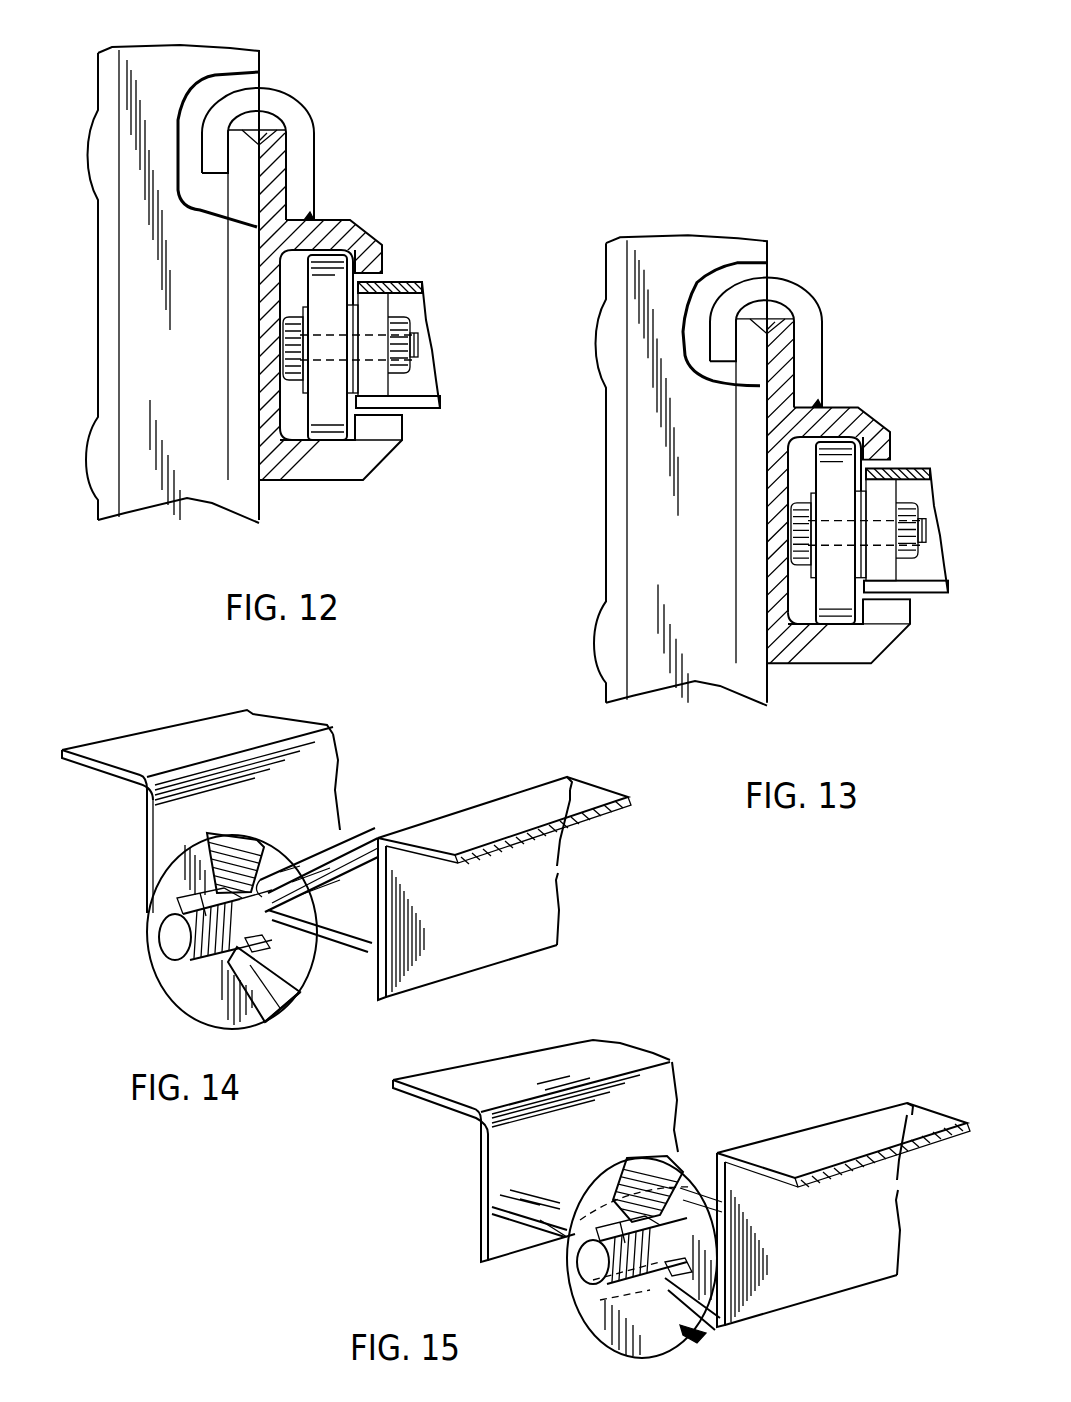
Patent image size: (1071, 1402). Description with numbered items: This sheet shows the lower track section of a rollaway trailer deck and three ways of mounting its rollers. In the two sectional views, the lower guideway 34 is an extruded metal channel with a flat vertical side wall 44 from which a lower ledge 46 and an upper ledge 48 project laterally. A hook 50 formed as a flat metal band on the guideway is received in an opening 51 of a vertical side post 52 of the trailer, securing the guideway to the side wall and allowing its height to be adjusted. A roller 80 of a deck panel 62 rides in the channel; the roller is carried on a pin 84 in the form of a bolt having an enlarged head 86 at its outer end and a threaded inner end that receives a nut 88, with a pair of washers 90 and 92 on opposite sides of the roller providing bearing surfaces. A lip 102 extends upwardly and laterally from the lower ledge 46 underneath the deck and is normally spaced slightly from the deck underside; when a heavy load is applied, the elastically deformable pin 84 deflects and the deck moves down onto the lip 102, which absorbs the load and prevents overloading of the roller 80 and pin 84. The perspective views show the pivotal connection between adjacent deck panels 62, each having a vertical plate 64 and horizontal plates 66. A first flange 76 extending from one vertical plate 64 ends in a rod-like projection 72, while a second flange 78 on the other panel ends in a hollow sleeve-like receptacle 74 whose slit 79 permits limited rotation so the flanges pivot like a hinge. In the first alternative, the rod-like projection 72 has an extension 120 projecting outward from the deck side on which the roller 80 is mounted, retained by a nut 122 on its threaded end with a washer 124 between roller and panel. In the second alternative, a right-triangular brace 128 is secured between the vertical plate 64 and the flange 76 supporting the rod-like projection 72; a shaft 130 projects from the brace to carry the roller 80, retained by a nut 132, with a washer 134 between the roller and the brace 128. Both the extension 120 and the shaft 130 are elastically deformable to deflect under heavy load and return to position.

In FIG. 12, the lower guideway 34 is at (313, 293).
In FIG. 13, the lower guideway 34 is at (729, 462).
In FIG. 12, the vertical side wall 44 is at (260, 346).
In FIG. 13, the vertical side wall 44 is at (729, 491).
In FIG. 12, the lower ledge 46 is at (334, 468).
In FIG. 13, the lower ledge 46 is at (838, 661).
In FIG. 12, the upper ledge 48 is at (345, 226).
In FIG. 13, the upper ledge 48 is at (850, 393).
In FIG. 12, the hook 50 is at (283, 105).
In FIG. 13, the hook 50 is at (783, 309).
In FIG. 12, the opening 51 is at (262, 126).
In FIG. 13, the opening 51 is at (805, 297).
In FIG. 12, the vertical side post 52 is at (178, 66).
In FIG. 13, the vertical side post 52 is at (680, 432).
In FIG. 12, the deck panel 62 is at (439, 345).
In FIG. 13, the deck panel 62 is at (921, 541).
In FIG. 14, the deck panel 62 is at (346, 852).
In FIG. 15, the deck panel 62 is at (679, 1172).
In FIG. 12, the vertical plate 64 is at (432, 369).
In FIG. 13, the vertical plate 64 is at (922, 530).
In FIG. 14, the vertical plate 64 is at (147, 830).
In FIG. 15, the vertical plate 64 is at (483, 1153).
In FIG. 12, the horizontal plate 66 is at (407, 285).
In FIG. 13, the horizontal plate 66 is at (921, 519).
In FIG. 14, the horizontal plate 66 is at (173, 740).
In FIG. 15, the horizontal plate 66 is at (502, 1070).
In FIG. 14, the rod-like projection 72 is at (303, 973).
In FIG. 14, the sleeve-like receptacle 74 is at (380, 825).
In FIG. 14, the first flange 76 is at (343, 937).
In FIG. 15, the first flange 76 is at (713, 1293).
In FIG. 14, the second flange 78 is at (343, 830).
In FIG. 15, the second flange 78 is at (527, 1220).
In FIG. 14, the slit 79 is at (307, 872).
In FIG. 12, the roller 80 is at (318, 418).
In FIG. 13, the roller 80 is at (759, 538).
In FIG. 14, the roller 80 is at (190, 990).
In FIG. 15, the roller 80 is at (627, 1327).
In FIG. 12, the pin 84 is at (420, 347).
In FIG. 13, the pin 84 is at (948, 521).
In FIG. 12, the enlarged head 86 is at (287, 373).
In FIG. 13, the enlarged head 86 is at (783, 539).
In FIG. 12, the nut 88 is at (402, 323).
In FIG. 13, the nut 88 is at (937, 513).
In FIG. 12, the washer 90 is at (303, 310).
In FIG. 13, the washer 90 is at (779, 520).
In FIG. 12, the washer 92 is at (352, 380).
In FIG. 13, the washer 92 is at (866, 613).
In FIG. 12, the lip 102 is at (390, 428).
In FIG. 13, the lip 102 is at (897, 652).
In FIG. 14, the extension 120 is at (170, 942).
In FIG. 14, the nut 122 is at (177, 908).
In FIG. 14, the washer 124 is at (263, 846).
In FIG. 15, the brace 128 is at (700, 1180).
In FIG. 15, the shaft 130 is at (590, 1263).
In FIG. 15, the nut 132 is at (610, 1293).
In FIG. 15, the washer 134 is at (680, 1193).